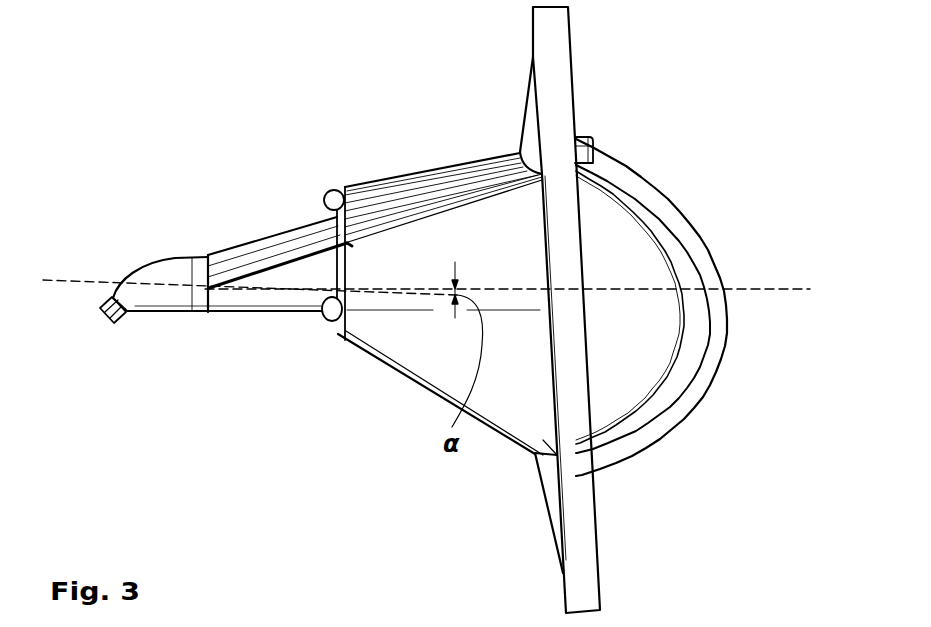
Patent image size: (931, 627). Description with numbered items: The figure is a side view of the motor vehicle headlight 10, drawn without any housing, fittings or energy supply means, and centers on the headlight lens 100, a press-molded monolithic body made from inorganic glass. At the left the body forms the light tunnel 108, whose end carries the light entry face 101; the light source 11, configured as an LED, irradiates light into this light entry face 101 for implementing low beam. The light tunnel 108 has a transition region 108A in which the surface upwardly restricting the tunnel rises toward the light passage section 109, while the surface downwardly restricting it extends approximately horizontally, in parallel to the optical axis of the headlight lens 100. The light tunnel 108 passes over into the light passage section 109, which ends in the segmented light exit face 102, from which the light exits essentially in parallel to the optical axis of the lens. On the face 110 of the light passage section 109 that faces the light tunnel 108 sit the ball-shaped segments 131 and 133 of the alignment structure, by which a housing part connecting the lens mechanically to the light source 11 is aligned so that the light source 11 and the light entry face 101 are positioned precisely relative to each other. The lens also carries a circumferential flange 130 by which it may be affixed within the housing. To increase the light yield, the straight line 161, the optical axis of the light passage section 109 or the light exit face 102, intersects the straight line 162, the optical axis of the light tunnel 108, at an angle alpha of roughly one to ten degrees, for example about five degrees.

The motor vehicle headlight 10 is at (127, 417).
The light source 11 is at (108, 320).
The headlight lens 100 is at (395, 463).
The light entry face 101 is at (122, 322).
The light exit face 102 is at (677, 213).
The light tunnel 108 is at (173, 268).
The transition region 108A is at (250, 253).
The light passage section 109 is at (407, 182).
The face of the light passage section 110 is at (333, 334).
The circumferential flange 130 is at (557, 37).
The ball-shaped segment 131 is at (327, 193).
The ball-shaped segment 133 is at (324, 318).
The straight line 161 is at (790, 285).
The straight line 162 is at (67, 283).